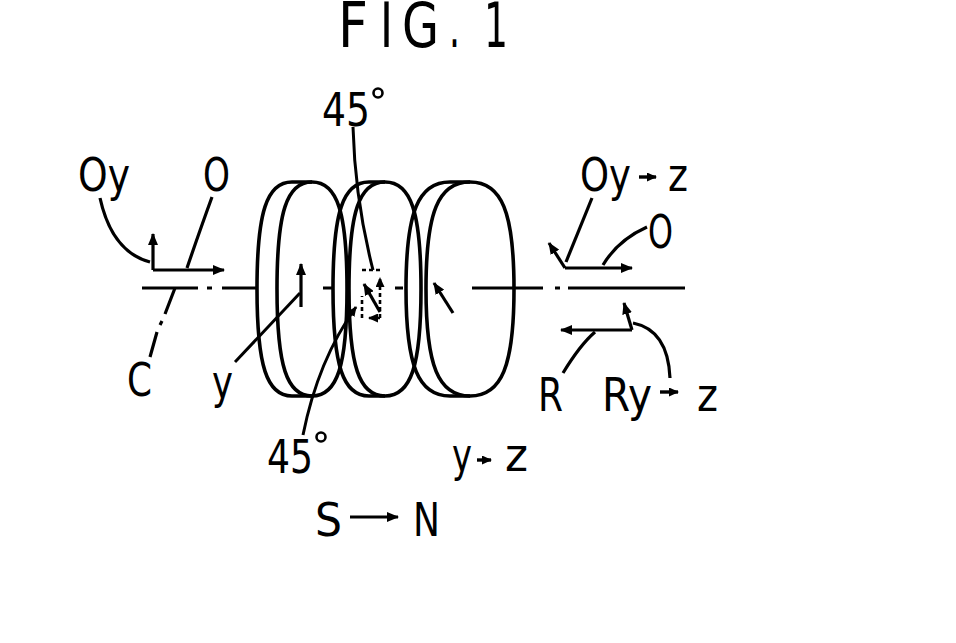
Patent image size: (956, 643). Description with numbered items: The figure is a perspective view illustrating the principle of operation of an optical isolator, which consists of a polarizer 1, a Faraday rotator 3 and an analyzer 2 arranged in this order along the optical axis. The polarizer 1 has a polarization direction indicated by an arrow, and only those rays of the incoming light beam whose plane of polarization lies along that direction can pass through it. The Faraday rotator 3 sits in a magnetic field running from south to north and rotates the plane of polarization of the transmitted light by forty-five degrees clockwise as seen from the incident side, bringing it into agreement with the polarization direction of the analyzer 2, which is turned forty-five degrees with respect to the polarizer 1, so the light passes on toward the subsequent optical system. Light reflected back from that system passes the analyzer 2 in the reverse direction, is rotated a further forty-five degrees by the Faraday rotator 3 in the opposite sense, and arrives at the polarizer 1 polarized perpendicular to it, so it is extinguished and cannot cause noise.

The polarizer 1 is at (292, 195).
The analyzer 2 is at (447, 182).
The Faraday rotator 3 is at (401, 368).